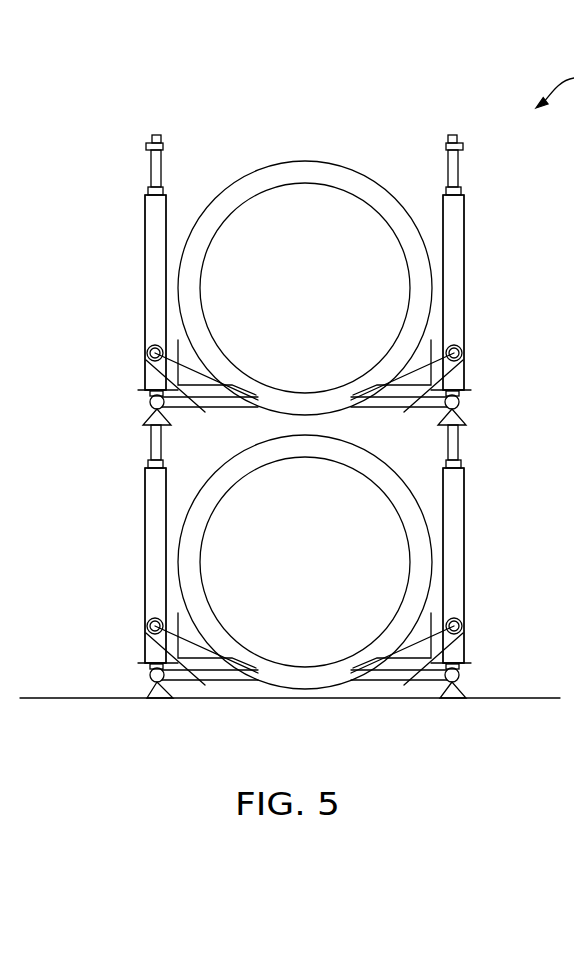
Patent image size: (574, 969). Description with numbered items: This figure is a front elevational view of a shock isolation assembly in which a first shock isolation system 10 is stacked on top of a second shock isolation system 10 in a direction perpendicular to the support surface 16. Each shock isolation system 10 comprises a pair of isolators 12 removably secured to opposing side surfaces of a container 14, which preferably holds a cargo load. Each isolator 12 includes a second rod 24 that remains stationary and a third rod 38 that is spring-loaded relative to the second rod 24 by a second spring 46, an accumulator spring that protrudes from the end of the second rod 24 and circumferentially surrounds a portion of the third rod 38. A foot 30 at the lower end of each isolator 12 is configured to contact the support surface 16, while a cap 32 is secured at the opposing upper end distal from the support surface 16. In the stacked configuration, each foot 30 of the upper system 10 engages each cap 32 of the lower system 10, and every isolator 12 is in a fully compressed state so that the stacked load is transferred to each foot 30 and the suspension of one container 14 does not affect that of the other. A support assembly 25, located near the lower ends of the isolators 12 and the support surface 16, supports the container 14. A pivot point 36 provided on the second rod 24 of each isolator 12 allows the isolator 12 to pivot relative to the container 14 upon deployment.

The shock isolation system 10 is at (112, 210).
The isolator 12 is at (150, 289).
The container 14 is at (313, 294).
The support surface 16 is at (214, 699).
The second rod 24 is at (150, 248).
The support assembly 25 is at (488, 388).
The foot 30 is at (150, 402).
The cap 32 is at (150, 141).
The pivot point 36 is at (150, 350).
The third rod 38 is at (152, 168).
The second spring 46 is at (148, 190).